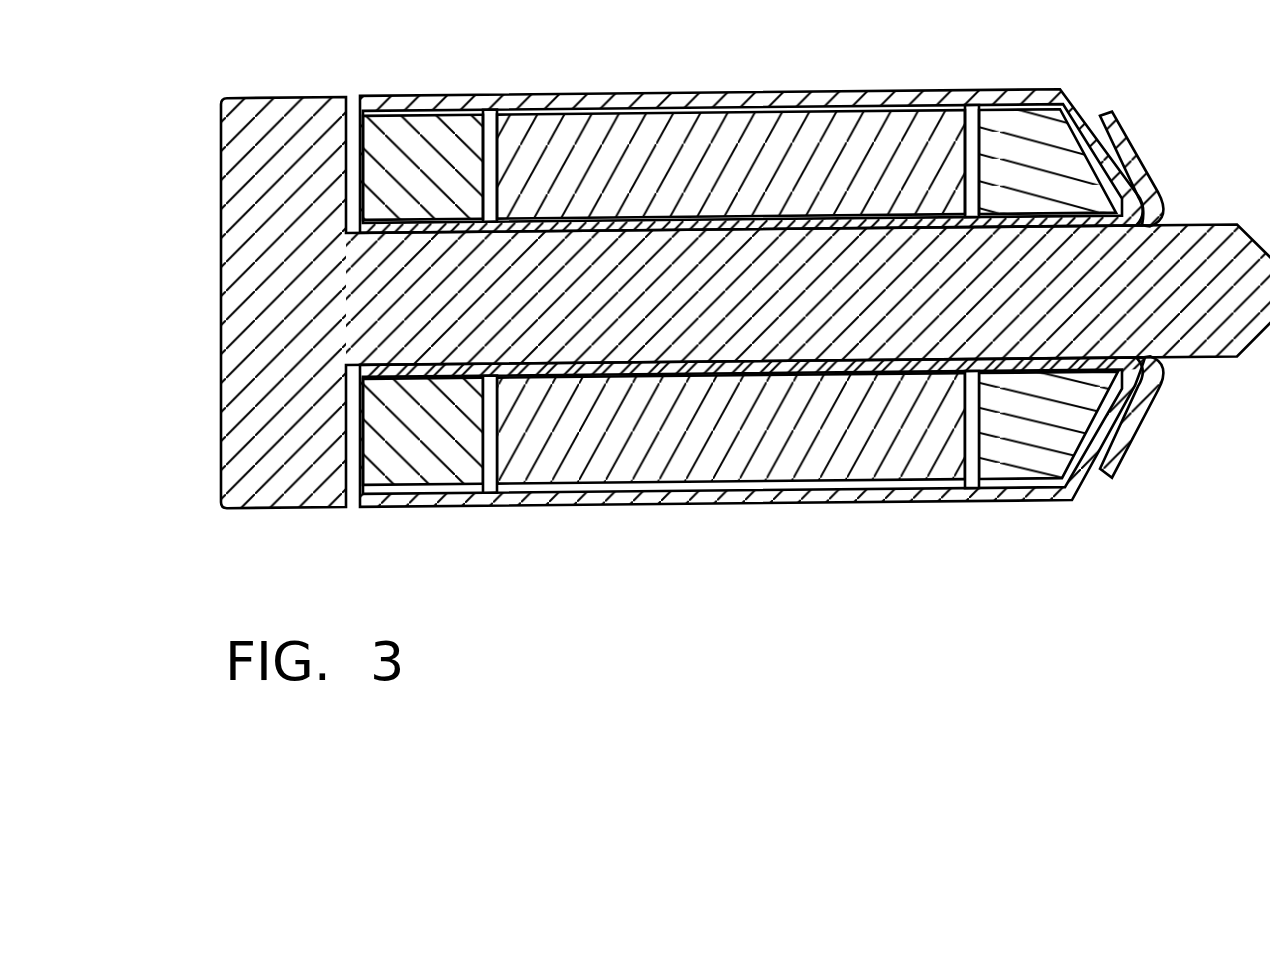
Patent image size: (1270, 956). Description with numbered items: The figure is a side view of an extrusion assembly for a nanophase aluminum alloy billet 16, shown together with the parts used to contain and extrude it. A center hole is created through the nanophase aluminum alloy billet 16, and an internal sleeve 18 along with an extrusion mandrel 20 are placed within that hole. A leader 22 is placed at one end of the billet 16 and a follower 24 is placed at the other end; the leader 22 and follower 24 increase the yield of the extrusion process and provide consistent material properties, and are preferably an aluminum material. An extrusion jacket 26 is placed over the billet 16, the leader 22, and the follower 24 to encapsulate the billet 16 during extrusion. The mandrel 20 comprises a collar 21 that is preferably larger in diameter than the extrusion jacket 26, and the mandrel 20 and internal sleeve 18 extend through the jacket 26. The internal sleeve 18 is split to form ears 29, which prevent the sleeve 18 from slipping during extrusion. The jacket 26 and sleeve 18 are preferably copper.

The nanophase aluminum alloy billet 16 is at (746, 182).
The internal sleeve 18 is at (527, 222).
The extrusion mandrel 20 is at (649, 308).
The collar 21 is at (237, 452).
The leader 22 is at (1046, 176).
The follower 24 is at (437, 179).
The extrusion jacket 26 is at (893, 510).
The ears 29 is at (1126, 139).